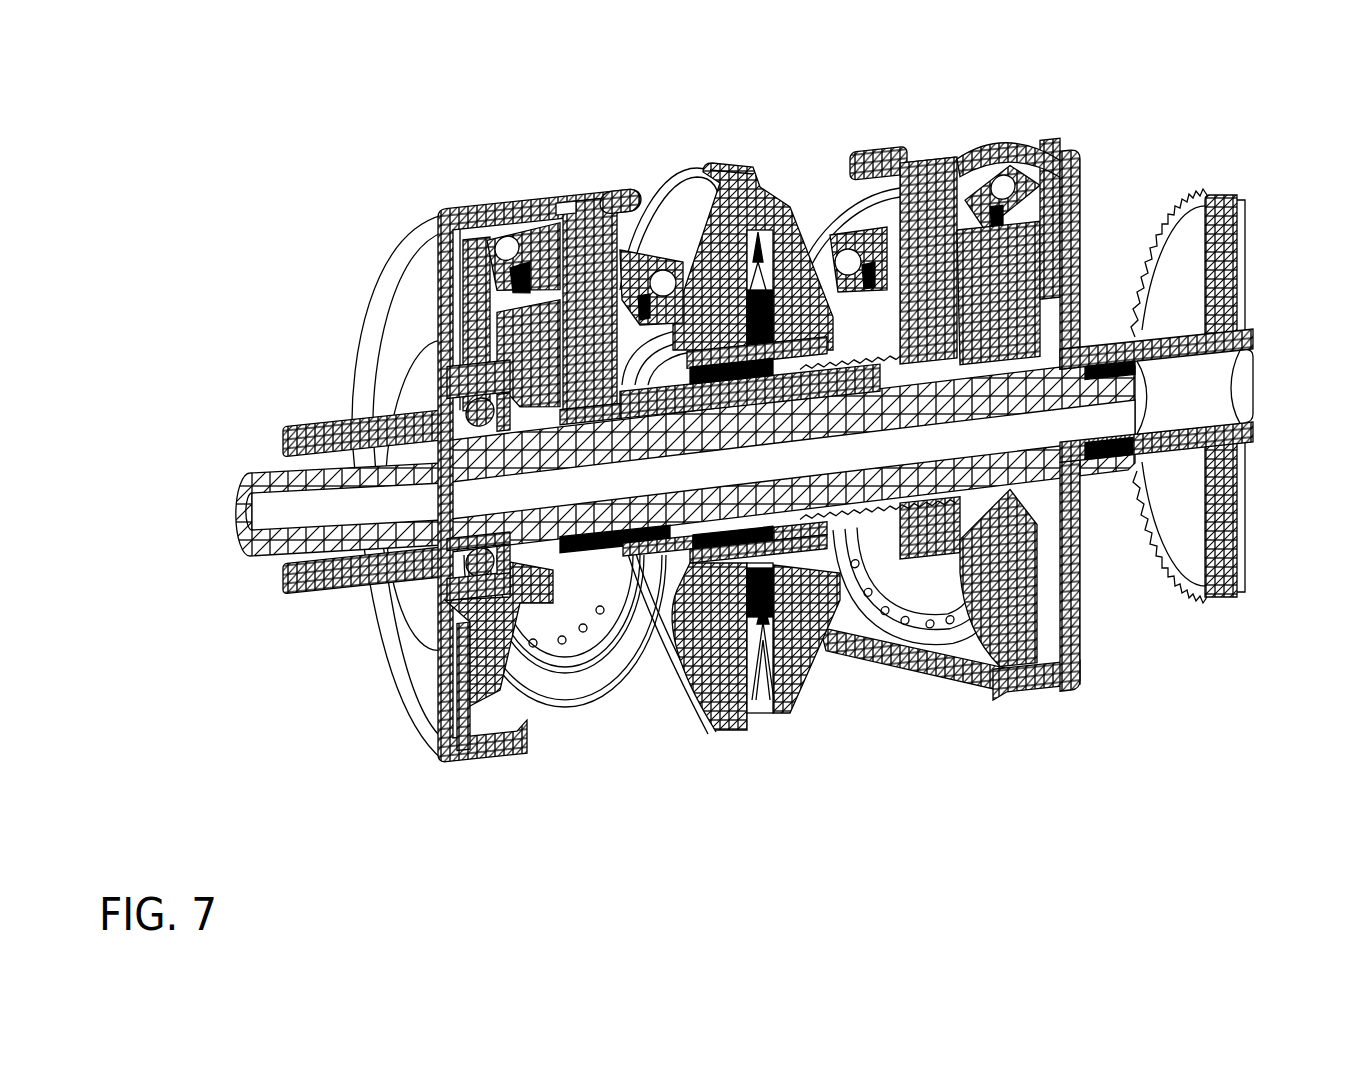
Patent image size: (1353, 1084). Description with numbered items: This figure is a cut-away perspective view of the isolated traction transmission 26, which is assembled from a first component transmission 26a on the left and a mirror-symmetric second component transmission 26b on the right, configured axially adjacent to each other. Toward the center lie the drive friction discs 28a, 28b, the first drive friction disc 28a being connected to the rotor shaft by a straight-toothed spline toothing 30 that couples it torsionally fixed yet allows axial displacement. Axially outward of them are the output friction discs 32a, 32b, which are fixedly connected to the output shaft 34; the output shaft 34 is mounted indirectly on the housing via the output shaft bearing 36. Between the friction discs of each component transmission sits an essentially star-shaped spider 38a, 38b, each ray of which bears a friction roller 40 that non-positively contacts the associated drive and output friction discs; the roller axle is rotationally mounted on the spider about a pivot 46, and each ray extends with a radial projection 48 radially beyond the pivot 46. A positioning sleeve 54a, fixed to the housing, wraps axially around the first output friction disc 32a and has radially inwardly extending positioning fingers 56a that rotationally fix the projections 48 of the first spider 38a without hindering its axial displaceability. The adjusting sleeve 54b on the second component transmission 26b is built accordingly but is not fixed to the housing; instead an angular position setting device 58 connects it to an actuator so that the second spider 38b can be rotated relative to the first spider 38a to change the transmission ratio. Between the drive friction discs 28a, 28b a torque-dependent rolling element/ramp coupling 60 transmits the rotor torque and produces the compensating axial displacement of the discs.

The traction transmission 26 is at (242, 142).
The first component transmission 26a is at (693, 744).
The second component transmission 26b is at (906, 730).
The first drive friction disc 28a is at (727, 262).
The second drive friction disc 28b is at (778, 205).
The straight-toothed spline toothing 30 is at (707, 165).
The first output friction disc 32a is at (438, 213).
The second output friction disc 32b is at (1046, 210).
The output shaft 34 is at (280, 485).
The output shaft bearing 36 is at (475, 562).
The first spider 38a is at (573, 332).
The second spider 38b is at (948, 268).
The friction roller 40 is at (643, 250).
The pivot 46 is at (473, 268).
The radial projection 48 is at (605, 192).
The positioning sleeve 54a is at (395, 290).
The adjusting sleeve 54b is at (1076, 180).
The positioning finger 56a is at (583, 208).
The angular position setting device 58 is at (1180, 263).
The rolling element/ramp coupling 60 is at (778, 713).